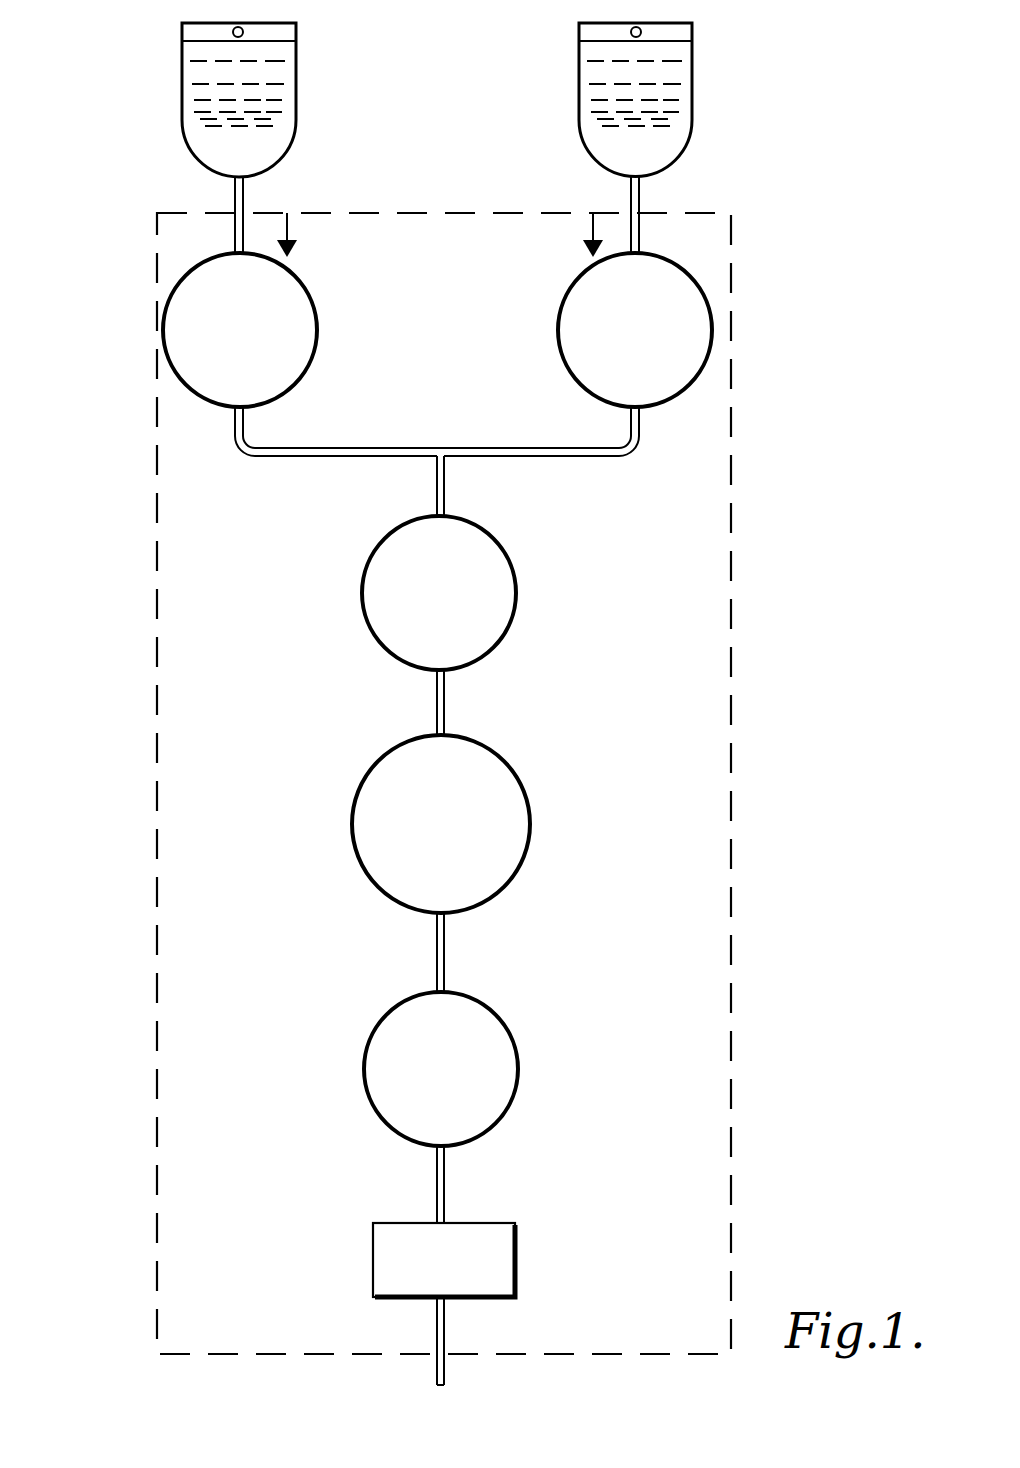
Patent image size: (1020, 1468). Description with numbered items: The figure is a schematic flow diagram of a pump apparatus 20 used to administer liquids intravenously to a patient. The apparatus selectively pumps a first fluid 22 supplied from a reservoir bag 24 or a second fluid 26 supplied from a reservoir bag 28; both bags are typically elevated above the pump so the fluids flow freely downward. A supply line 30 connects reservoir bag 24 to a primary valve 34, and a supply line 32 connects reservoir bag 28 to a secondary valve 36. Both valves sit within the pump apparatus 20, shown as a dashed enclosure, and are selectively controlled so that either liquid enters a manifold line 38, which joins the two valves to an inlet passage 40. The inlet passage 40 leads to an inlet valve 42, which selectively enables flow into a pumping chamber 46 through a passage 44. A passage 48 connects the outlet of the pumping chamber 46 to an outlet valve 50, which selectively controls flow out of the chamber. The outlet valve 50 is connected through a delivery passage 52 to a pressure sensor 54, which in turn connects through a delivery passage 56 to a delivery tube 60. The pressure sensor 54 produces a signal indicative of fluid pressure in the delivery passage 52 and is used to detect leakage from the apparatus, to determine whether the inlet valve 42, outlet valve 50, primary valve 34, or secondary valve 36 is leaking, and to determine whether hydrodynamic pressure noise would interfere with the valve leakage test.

The pump apparatus 20 is at (124, 1216).
The first fluid 22 is at (200, 101).
The reservoir bag 24 is at (297, 68).
The second fluid 26 is at (597, 101).
The reservoir bag 28 is at (693, 70).
The supply line 30 is at (234, 200).
The supply line 32 is at (640, 200).
The primary valve 34 is at (318, 330).
The secondary valve 36 is at (557, 330).
The manifold line 38 is at (438, 447).
The inlet passage 40 is at (436, 485).
The inlet valve 42 is at (517, 593).
The passage 44 is at (436, 700).
The pumping chamber 46 is at (531, 825).
The passage 48 is at (436, 940).
The outlet valve 50 is at (519, 1069).
The delivery passage 52 is at (436, 1185).
The pressure sensor 54 is at (516, 1260).
The delivery passage 56 is at (436, 1334).
The delivery tube 60 is at (446, 1368).